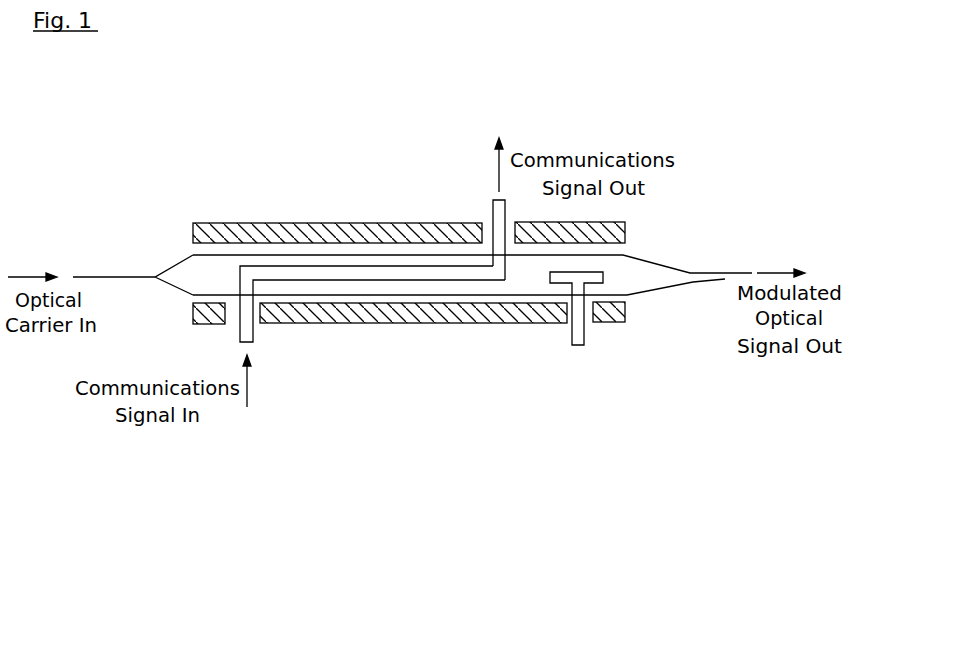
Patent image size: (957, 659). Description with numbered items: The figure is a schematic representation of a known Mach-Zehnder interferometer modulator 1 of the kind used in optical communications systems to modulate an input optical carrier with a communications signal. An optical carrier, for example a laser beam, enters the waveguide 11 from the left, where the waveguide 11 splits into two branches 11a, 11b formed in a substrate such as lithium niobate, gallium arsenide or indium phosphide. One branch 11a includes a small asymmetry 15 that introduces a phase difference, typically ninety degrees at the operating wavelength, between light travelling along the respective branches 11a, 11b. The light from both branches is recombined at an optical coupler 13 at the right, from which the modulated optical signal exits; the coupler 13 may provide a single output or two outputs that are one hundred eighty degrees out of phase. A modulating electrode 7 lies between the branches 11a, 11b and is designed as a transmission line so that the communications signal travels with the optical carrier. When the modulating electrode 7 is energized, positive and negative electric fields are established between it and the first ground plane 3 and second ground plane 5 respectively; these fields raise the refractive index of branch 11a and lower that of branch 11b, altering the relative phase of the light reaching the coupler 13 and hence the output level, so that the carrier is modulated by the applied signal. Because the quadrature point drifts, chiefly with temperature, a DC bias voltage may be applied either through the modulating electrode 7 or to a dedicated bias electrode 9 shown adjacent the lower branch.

The MZI modulator 1 is at (180, 152).
The first ground plane 3 is at (347, 230).
The second ground plane 5 is at (418, 306).
The modulating electrode 7 is at (315, 275).
The bias electrode 9 is at (577, 320).
The waveguide 11 is at (117, 277).
The first branch 11a is at (260, 253).
The second branch 11b is at (478, 295).
The optical coupler 13 is at (700, 273).
The asymmetry 15 is at (425, 252).